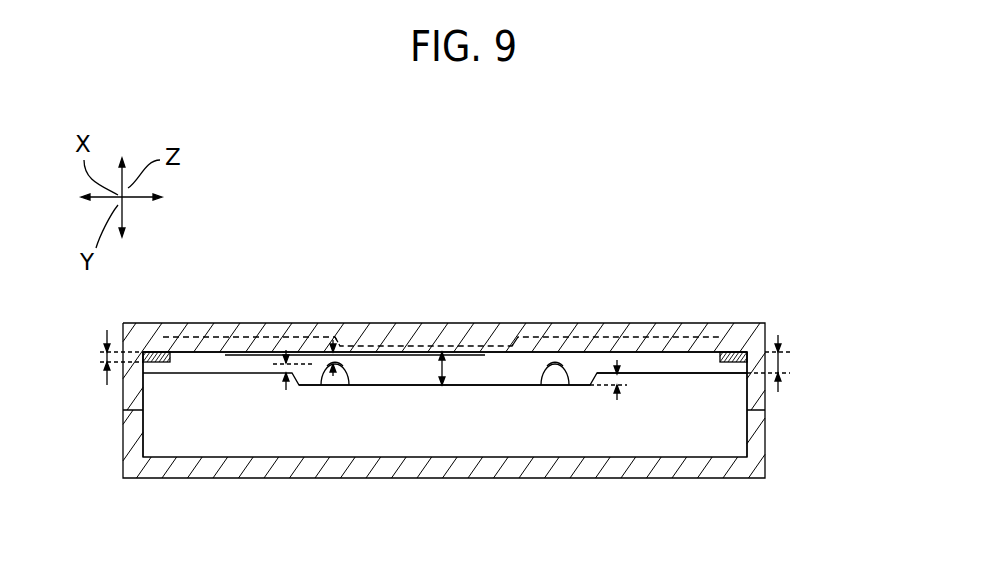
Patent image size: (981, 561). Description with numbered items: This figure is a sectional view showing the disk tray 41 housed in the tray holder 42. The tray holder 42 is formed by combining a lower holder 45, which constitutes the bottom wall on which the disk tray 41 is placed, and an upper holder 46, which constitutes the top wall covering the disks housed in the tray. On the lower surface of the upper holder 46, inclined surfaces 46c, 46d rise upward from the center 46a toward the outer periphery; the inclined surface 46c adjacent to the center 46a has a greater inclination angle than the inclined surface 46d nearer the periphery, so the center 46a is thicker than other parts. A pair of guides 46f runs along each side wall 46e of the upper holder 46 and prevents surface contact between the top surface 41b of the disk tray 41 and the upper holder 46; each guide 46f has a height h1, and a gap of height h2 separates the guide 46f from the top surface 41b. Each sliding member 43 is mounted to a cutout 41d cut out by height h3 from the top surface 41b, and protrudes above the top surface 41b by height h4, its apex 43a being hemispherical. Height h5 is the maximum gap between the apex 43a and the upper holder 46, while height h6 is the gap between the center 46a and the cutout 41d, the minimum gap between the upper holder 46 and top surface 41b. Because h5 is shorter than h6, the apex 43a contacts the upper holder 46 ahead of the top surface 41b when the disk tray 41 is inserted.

The disk tray 41 is at (680, 443).
The top surface of disk tray 41b is at (703, 373).
The cutout 41d is at (498, 388).
The tray holder 42 is at (498, 400).
The sliding member 43 is at (571, 365).
The apex of sliding member 43a is at (560, 357).
The lower holder 45 is at (822, 393).
The upper holder 46 is at (757, 408).
The center of upper holder 46a is at (450, 352).
The inclined surface 46c is at (518, 344).
The inclined surface 46d is at (660, 337).
The side wall of upper holder 46e is at (748, 390).
The guide 46f is at (735, 352).
The height of guide h1 is at (105, 357).
The height of gap between guide and top surface h2 is at (790, 365).
The height of cutout h3 is at (617, 400).
The protruding height of sliding member h4 is at (286, 390).
The maximum gap height between apex and upper holder h5 is at (333, 340).
The gap height between center and cutout h6 is at (442, 387).